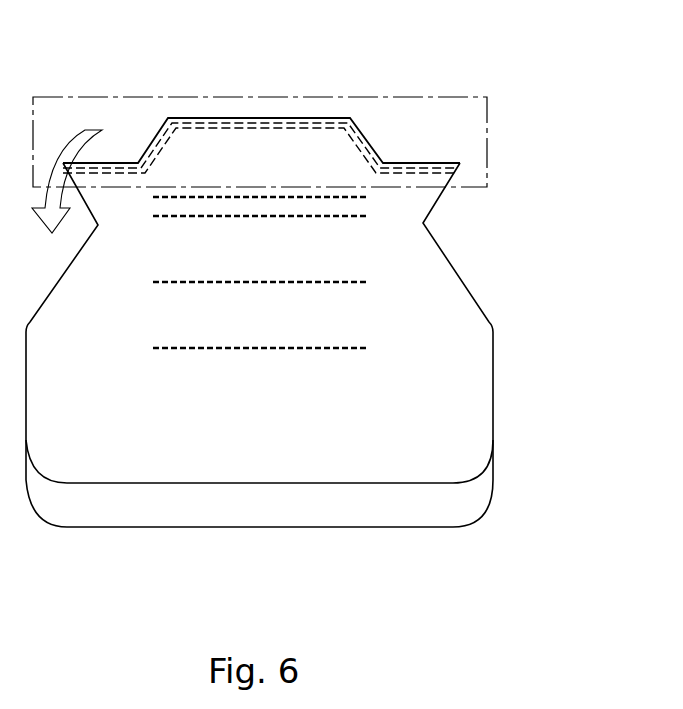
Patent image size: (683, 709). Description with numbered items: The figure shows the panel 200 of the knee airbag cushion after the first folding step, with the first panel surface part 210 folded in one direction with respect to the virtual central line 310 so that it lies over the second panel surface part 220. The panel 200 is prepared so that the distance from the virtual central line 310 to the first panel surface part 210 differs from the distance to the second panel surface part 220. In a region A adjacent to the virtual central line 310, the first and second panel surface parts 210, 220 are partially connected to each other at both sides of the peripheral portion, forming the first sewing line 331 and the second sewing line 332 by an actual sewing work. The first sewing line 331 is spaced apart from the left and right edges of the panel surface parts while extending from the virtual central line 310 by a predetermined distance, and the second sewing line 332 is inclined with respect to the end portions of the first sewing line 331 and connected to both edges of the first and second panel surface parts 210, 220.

The region adjacent to the virtual central line A is at (107, 97).
The panel 200 is at (345, 345).
The first panel surface part 210 is at (457, 415).
The second panel surface part 220 is at (437, 503).
The virtual central line 310 is at (262, 117).
The first sewing line 331 is at (365, 133).
The second sewing line 332 is at (423, 170).